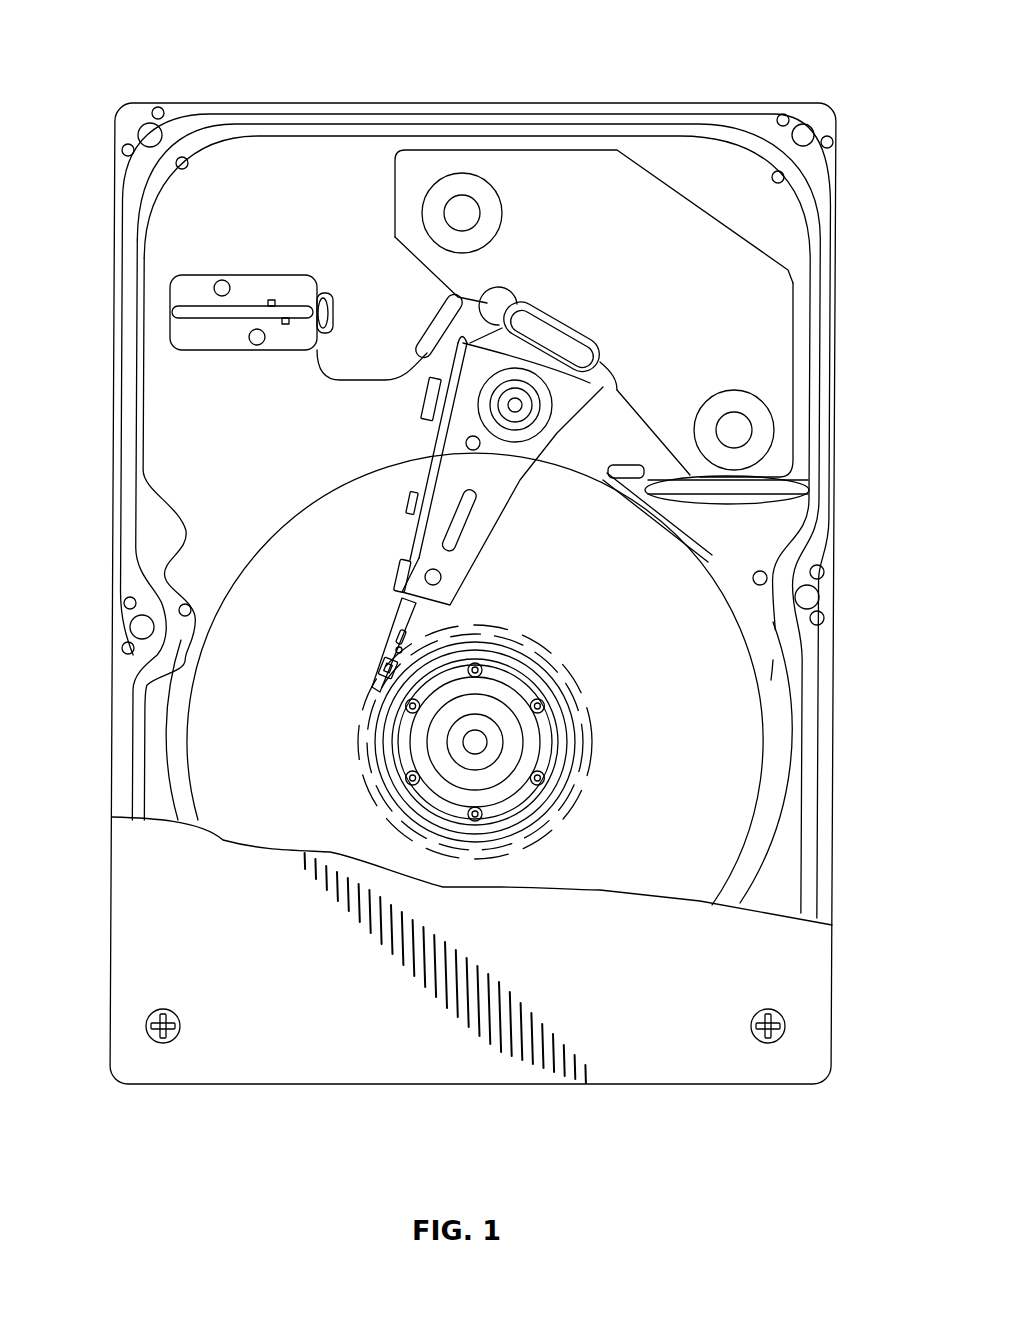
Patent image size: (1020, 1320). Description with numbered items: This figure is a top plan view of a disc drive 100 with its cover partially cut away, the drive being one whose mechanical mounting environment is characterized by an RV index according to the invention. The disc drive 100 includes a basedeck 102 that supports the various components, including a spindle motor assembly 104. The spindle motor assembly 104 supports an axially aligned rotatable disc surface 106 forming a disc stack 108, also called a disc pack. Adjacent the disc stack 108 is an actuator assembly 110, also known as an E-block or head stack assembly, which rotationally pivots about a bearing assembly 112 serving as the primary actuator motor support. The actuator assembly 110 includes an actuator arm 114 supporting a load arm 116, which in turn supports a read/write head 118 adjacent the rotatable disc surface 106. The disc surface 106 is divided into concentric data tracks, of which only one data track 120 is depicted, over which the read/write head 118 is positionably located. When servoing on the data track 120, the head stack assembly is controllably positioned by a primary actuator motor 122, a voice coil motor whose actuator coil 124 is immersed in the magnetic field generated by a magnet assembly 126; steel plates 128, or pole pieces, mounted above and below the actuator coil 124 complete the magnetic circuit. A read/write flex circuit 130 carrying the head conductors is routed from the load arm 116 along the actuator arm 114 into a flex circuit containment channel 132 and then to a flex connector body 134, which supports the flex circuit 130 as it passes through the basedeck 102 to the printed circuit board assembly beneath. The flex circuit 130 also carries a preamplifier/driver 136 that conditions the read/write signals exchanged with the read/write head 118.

The disc drive 100 is at (386, 80).
The basedeck 102 is at (315, 185).
The spindle motor assembly 104 is at (520, 695).
The rotatable disc surface 106 is at (793, 615).
The disc stack 108 is at (768, 762).
The actuator assembly 110 is at (428, 456).
The bearing assembly 112 is at (556, 398).
The actuator arm 114 is at (447, 567).
The load arm 116 is at (393, 632).
The read/write head 118 is at (378, 667).
The data track 120 is at (567, 807).
The primary actuator motor 122 is at (780, 268).
The actuator coil 124 is at (515, 318).
The magnet assembly 126 is at (545, 175).
The steel plates 128 is at (765, 355).
The read/write flex circuit 130 is at (335, 379).
The flex circuit containment channel 132 is at (410, 492).
The flex connector body 134 is at (178, 346).
The preamplifier/driver 136 is at (425, 400).